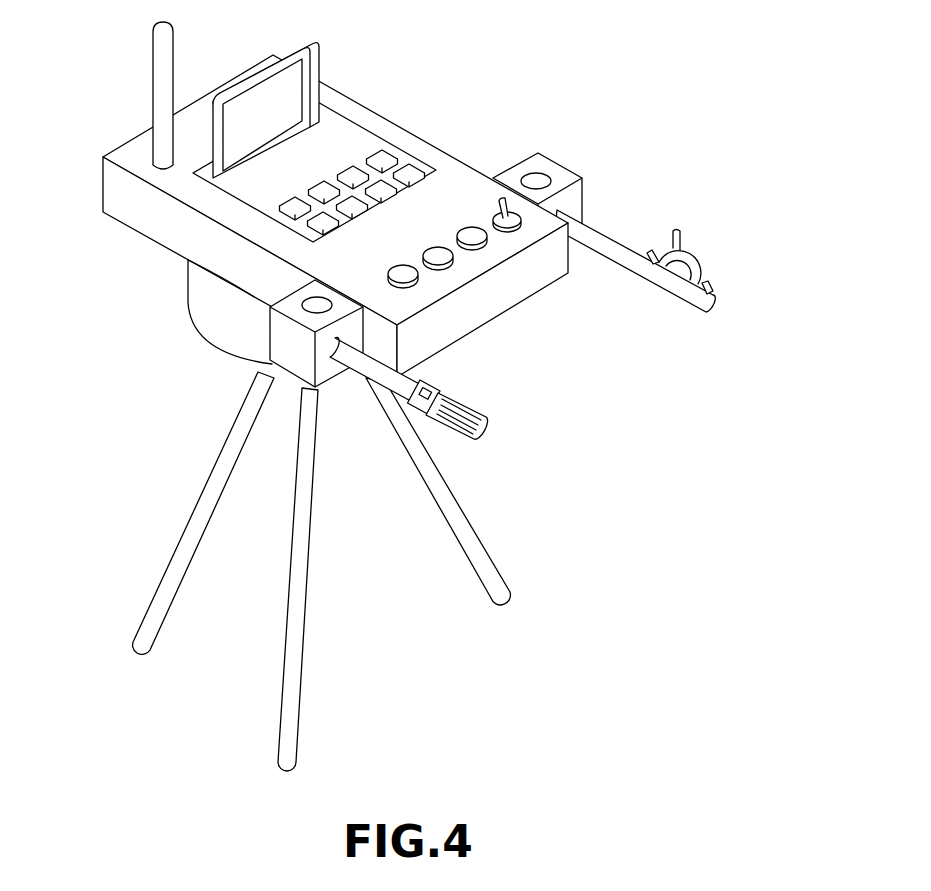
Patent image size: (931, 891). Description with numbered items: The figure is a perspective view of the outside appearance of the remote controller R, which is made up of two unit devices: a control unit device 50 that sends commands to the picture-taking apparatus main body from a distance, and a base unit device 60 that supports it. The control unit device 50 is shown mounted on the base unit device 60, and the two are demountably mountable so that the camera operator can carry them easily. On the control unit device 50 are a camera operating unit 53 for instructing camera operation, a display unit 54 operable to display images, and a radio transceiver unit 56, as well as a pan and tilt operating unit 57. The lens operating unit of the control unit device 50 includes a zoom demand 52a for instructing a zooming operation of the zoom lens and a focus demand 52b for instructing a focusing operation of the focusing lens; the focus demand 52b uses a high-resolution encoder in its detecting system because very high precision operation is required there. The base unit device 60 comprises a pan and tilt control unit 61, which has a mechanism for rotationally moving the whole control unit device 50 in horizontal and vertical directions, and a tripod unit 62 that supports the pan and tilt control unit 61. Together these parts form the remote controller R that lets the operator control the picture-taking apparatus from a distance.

The control unit device 50 is at (410, 395).
The zoom demand 52a is at (470, 402).
The focus demand 52b is at (695, 253).
The camera operating unit 53 is at (344, 145).
The display unit 54 is at (298, 76).
The radio transceiver unit 56 is at (160, 50).
The pan and tilt operating unit 57 is at (611, 252).
The base unit device 60 is at (283, 571).
The pan and tilt control unit 61 is at (232, 326).
The tripod unit 62 is at (300, 708).
The remote controller R is at (479, 149).